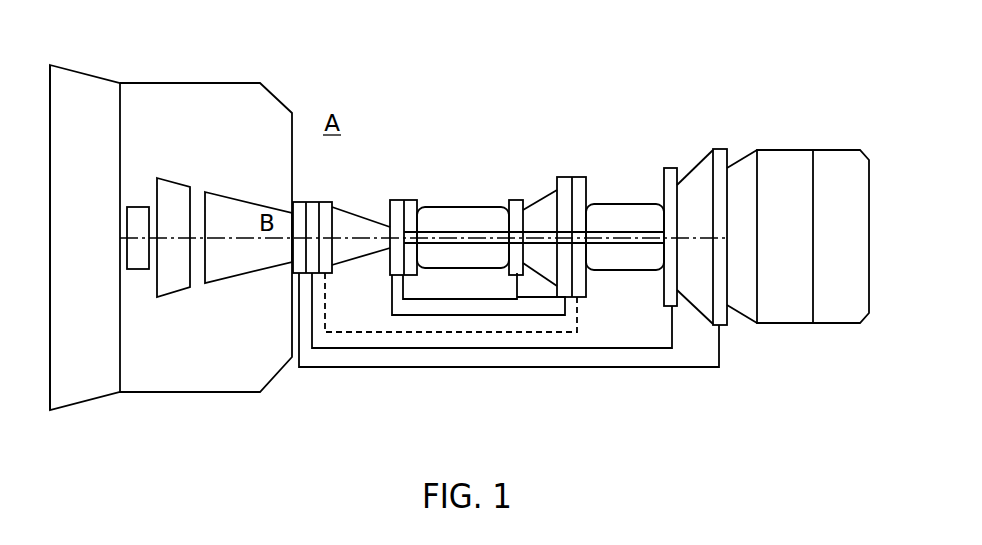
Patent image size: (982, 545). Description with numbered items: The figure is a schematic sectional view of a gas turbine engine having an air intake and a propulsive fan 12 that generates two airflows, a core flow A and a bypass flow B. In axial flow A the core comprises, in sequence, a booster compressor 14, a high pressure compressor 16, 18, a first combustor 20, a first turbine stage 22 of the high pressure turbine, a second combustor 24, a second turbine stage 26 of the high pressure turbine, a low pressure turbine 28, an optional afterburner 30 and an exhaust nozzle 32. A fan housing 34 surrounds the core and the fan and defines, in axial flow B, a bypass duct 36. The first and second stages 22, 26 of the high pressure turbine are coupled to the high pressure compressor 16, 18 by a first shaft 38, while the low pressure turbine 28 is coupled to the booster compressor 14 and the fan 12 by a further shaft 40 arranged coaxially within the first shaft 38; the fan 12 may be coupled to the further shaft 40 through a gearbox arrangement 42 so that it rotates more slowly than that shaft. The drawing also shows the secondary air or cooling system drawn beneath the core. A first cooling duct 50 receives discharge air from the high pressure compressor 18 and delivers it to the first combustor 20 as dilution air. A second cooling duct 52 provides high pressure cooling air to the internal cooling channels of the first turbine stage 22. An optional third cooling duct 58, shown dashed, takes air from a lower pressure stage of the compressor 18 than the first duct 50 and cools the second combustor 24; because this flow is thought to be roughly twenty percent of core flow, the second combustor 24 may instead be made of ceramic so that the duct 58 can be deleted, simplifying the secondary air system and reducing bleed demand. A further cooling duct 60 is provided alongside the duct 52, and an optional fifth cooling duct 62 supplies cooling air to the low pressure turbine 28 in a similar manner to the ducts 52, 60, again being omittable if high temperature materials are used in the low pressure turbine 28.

The propulsive fan 12 is at (52, 202).
The booster compressor 14 is at (155, 184).
The high pressure compressor 16 is at (232, 196).
The high pressure compressor 18 is at (348, 207).
The first combustor 20 is at (445, 207).
The first turbine stage 22 is at (548, 195).
The second combustor 24 is at (608, 204).
The second turbine stage 26 is at (677, 185).
The low pressure turbine 28 is at (743, 157).
The afterburner 30 is at (787, 150).
The exhaust nozzle 32 is at (840, 150).
The fan housing 34 is at (183, 82).
The bypass duct 36 is at (207, 149).
The first shaft 38 is at (507, 245).
The further shaft 40 is at (250, 239).
The gearbox arrangement 42 is at (135, 269).
The first cooling duct 50 is at (467, 300).
The second cooling duct 52 is at (427, 315).
The third cooling duct 58 is at (490, 335).
The cooling duct 60 is at (610, 348).
The fifth cooling duct 62 is at (705, 367).